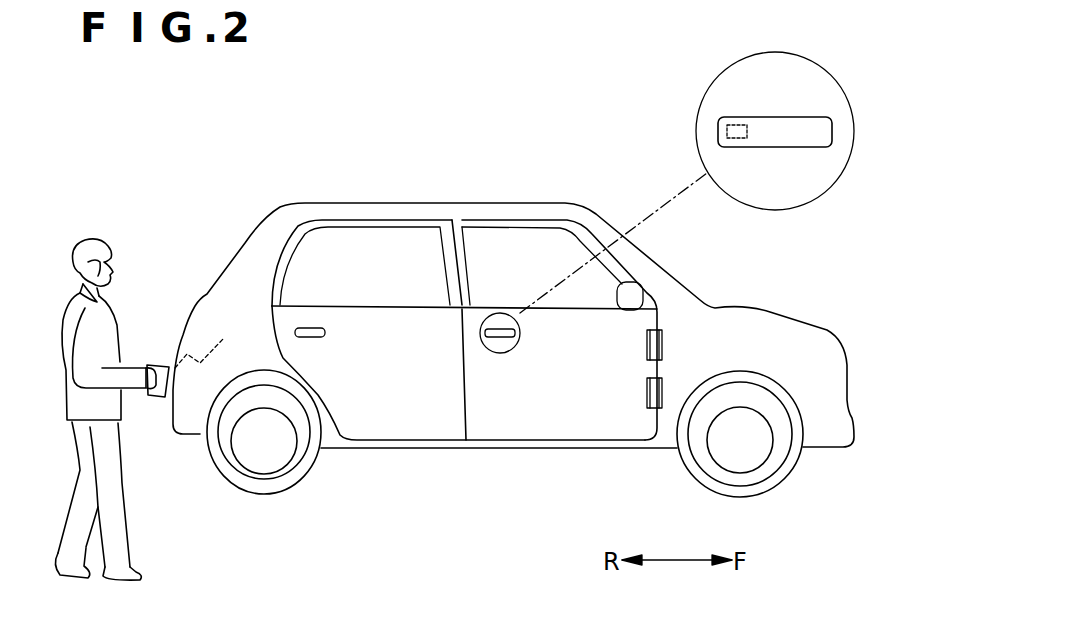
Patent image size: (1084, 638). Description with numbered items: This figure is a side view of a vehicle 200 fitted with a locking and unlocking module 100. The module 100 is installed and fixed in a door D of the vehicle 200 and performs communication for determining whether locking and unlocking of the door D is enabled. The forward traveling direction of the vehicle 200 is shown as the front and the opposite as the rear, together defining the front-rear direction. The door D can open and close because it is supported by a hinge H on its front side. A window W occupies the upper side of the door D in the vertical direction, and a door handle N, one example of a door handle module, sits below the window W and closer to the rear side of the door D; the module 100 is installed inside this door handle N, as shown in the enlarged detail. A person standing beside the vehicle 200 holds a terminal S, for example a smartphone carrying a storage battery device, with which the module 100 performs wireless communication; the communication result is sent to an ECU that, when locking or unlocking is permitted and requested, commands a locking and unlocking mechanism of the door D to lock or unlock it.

The vehicle 200 is at (253, 148).
The module 100 is at (730, 118).
The window W is at (537, 247).
The door handle N is at (498, 340).
The hinge H is at (662, 390).
The door D is at (573, 413).
The terminal S is at (165, 365).